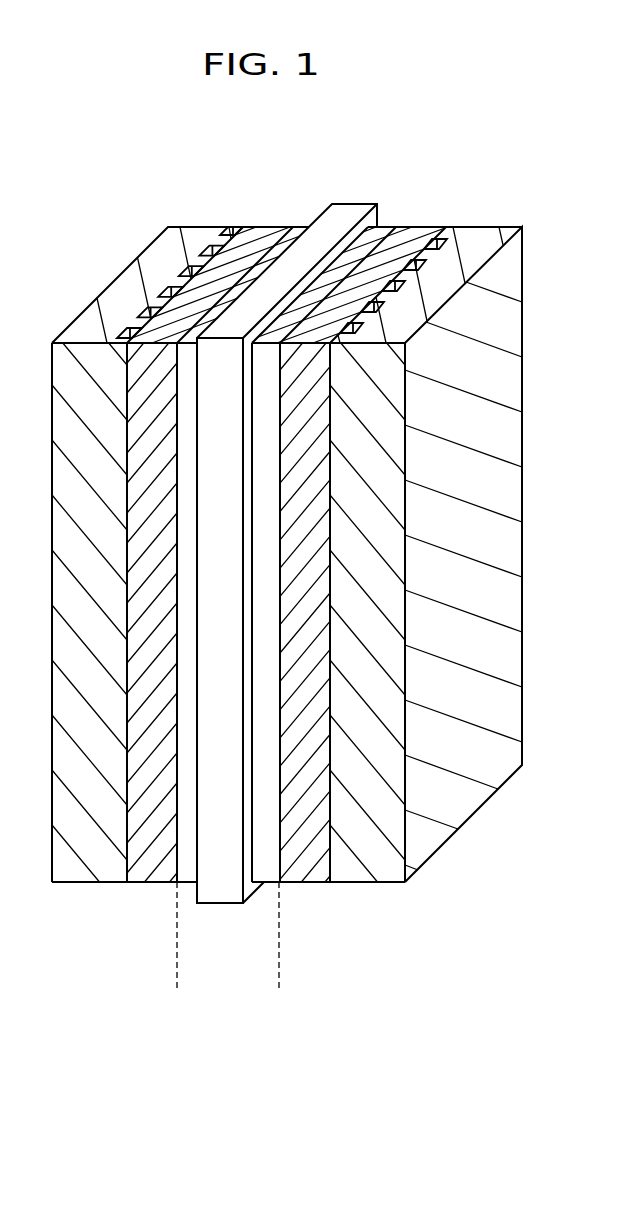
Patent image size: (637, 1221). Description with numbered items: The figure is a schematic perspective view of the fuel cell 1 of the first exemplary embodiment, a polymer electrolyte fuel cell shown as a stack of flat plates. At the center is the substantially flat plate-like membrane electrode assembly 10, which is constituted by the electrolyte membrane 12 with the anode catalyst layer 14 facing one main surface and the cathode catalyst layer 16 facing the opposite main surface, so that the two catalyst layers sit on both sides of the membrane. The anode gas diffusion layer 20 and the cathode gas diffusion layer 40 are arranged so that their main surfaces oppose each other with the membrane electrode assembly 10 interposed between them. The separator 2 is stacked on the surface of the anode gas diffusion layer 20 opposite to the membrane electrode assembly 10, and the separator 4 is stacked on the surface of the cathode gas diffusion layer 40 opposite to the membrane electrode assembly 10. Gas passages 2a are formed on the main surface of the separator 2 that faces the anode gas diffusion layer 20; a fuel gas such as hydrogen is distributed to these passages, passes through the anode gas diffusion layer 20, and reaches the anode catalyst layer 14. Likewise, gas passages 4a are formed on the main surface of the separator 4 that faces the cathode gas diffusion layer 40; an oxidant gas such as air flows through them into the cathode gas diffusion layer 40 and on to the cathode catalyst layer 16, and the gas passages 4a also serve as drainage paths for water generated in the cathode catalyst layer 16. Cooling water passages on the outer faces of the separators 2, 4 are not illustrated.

The fuel cell 1 is at (315, 1081).
The separator 2 is at (80, 882).
The gas passages 2a is at (200, 258).
The separator 4 is at (367, 882).
The gas passages 4a is at (428, 260).
The membrane electrode assembly 10 is at (177, 990).
The electrolyte membrane 12 is at (228, 903).
The anode catalyst layer 14 is at (185, 882).
The cathode catalyst layer 16 is at (272, 882).
The anode gas diffusion layer 20 is at (140, 882).
The cathode gas diffusion layer 40 is at (315, 882).